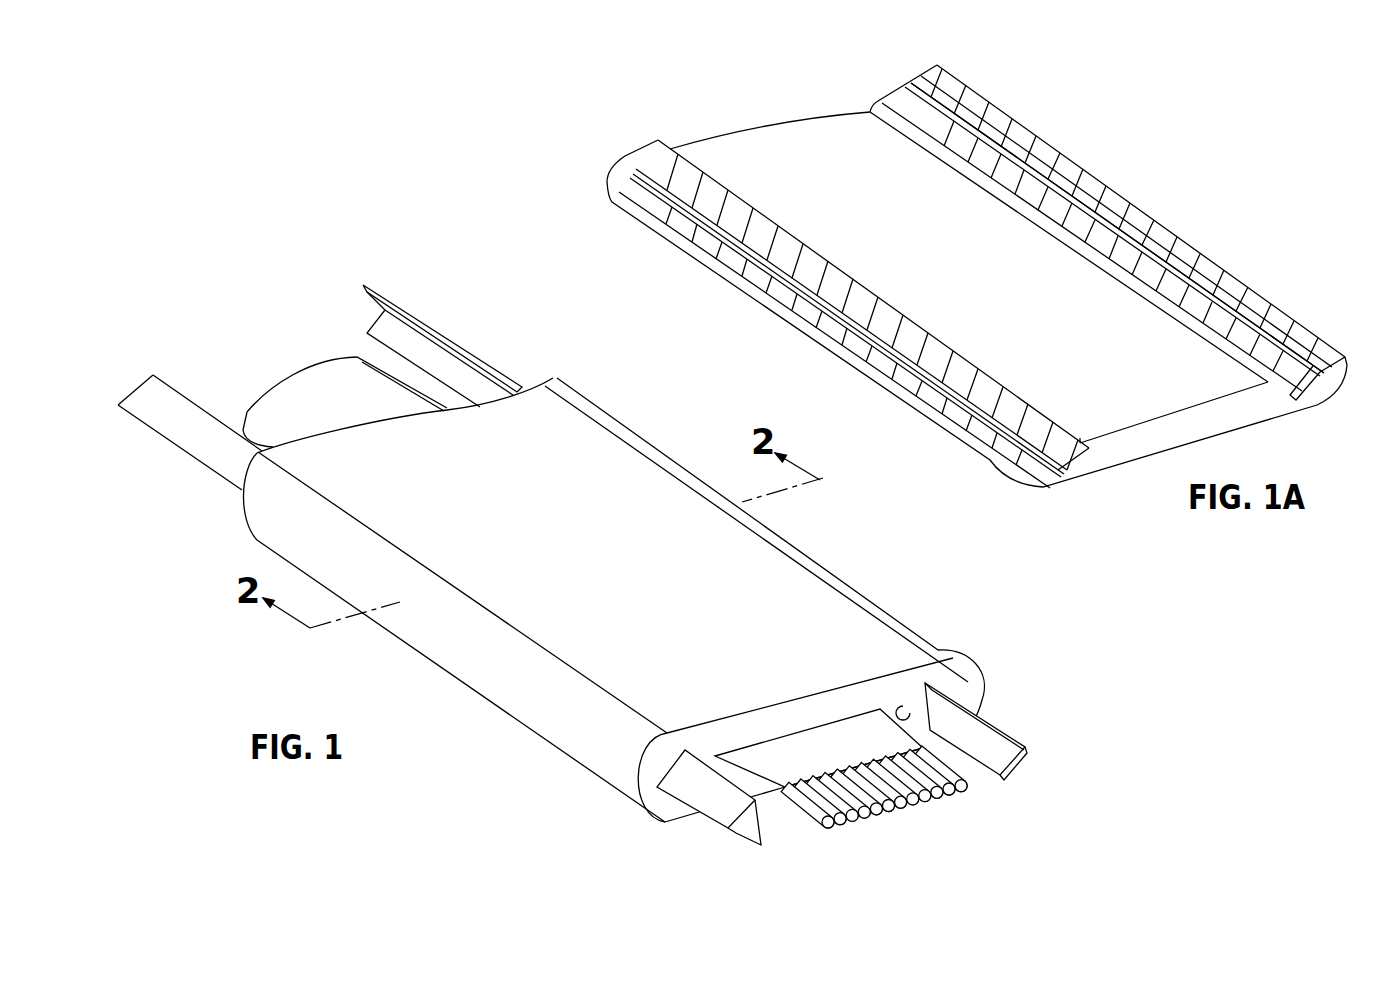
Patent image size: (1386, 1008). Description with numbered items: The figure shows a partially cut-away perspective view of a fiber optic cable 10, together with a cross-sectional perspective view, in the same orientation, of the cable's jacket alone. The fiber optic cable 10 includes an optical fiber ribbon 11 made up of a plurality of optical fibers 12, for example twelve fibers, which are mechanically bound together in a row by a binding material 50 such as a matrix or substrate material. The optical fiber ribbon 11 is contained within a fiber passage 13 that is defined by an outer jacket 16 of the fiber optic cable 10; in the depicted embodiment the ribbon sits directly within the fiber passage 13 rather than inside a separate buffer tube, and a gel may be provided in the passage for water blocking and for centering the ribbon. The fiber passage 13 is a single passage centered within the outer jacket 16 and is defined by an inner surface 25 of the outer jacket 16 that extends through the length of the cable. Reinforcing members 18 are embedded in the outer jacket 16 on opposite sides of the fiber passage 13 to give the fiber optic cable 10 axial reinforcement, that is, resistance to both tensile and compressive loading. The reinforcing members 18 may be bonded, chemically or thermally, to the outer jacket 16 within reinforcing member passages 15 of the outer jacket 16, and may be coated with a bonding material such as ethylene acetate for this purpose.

In FIG. 1, the fiber optic cable 10 is at (290, 298).
In FIG. 1, the optical fiber ribbon 11 is at (853, 732).
In FIG. 1, the optical fibers 12 is at (808, 815).
In FIG. 1, the fiber passage 13 is at (900, 715).
In FIG. 1A, the fiber passage 13 is at (799, 153).
In FIG. 1A, the reinforcing member passages 15 is at (1123, 225).
In FIG. 1, the outer jacket 16 is at (590, 452).
In FIG. 1A, the outer jacket 16 is at (1128, 463).
In FIG. 1, the reinforcing members 18 is at (168, 415).
In FIG. 1A, the inner surface 25 is at (735, 160).
In FIG. 1, the binding material 50 is at (783, 800).